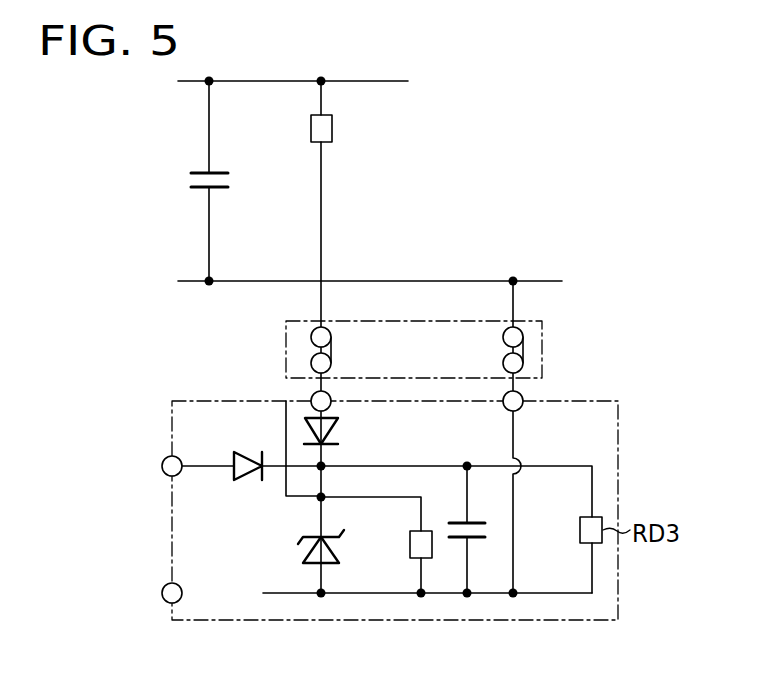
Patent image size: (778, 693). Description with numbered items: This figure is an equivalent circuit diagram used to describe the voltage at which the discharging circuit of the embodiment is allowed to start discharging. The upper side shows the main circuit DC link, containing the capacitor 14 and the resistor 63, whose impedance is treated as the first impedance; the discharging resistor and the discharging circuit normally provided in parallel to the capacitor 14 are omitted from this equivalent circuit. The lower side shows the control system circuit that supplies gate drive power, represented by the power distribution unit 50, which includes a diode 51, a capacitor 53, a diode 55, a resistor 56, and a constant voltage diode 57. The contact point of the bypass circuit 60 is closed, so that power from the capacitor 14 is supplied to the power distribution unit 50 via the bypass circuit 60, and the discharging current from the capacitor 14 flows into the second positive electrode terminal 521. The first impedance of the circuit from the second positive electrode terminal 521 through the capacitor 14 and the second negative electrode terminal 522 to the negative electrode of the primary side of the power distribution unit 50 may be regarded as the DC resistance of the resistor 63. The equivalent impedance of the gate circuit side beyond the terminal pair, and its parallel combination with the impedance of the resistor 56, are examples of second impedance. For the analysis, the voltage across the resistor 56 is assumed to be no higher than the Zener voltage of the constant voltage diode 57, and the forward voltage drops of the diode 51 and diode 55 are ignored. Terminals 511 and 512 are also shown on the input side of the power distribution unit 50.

The capacitor 14 is at (214, 168).
The resistor 63 is at (332, 128).
The bypass circuit 60 is at (543, 351).
The power distribution unit 50 is at (586, 401).
The second positive electrode terminal 521 is at (311, 401).
The second negative electrode terminal 522 is at (524, 398).
The terminal 511 is at (162, 466).
The terminal 512 is at (162, 593).
The diode 55 is at (338, 420).
The diode 51 is at (232, 457).
The constant voltage diode 57 is at (303, 553).
The resistor 56 is at (411, 535).
The capacitor 53 is at (470, 521).